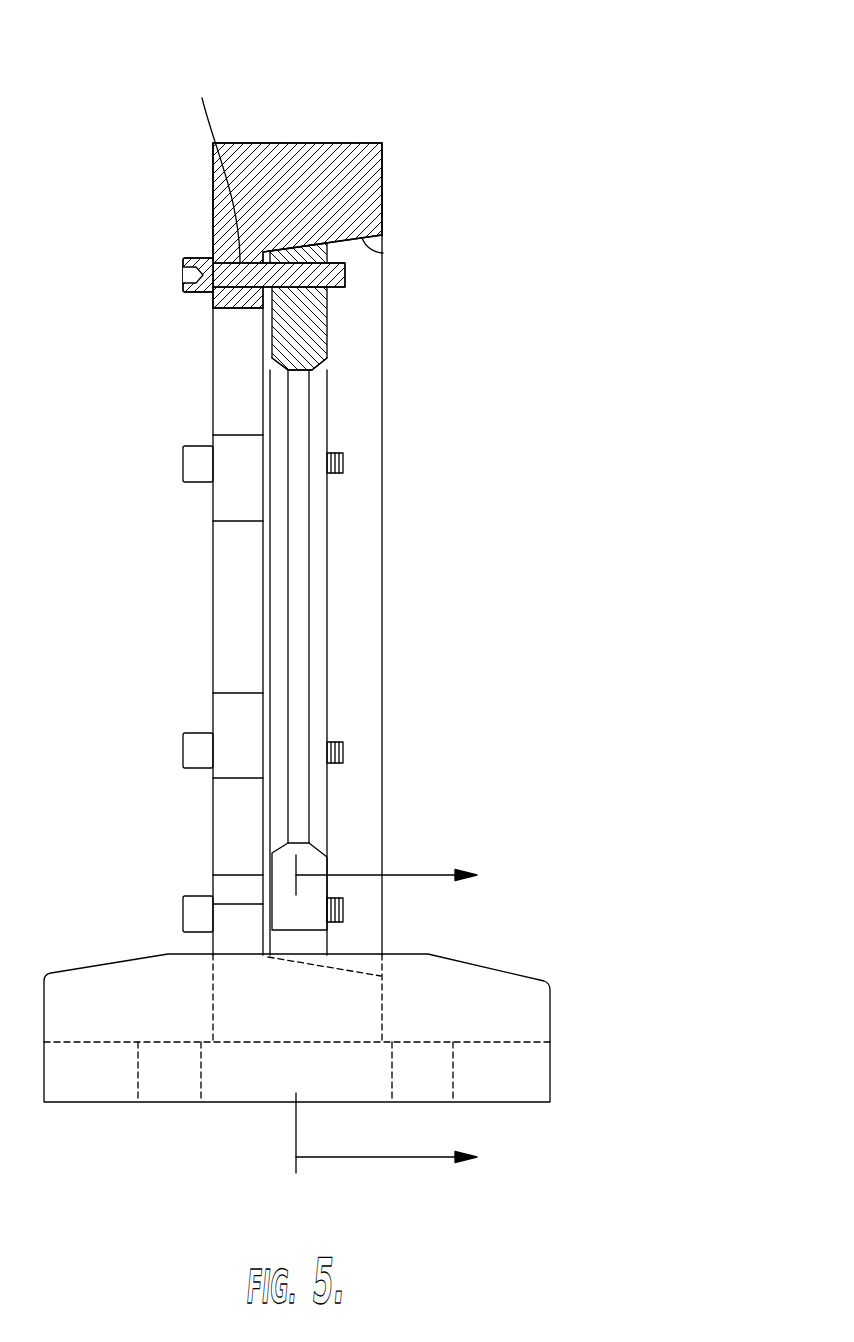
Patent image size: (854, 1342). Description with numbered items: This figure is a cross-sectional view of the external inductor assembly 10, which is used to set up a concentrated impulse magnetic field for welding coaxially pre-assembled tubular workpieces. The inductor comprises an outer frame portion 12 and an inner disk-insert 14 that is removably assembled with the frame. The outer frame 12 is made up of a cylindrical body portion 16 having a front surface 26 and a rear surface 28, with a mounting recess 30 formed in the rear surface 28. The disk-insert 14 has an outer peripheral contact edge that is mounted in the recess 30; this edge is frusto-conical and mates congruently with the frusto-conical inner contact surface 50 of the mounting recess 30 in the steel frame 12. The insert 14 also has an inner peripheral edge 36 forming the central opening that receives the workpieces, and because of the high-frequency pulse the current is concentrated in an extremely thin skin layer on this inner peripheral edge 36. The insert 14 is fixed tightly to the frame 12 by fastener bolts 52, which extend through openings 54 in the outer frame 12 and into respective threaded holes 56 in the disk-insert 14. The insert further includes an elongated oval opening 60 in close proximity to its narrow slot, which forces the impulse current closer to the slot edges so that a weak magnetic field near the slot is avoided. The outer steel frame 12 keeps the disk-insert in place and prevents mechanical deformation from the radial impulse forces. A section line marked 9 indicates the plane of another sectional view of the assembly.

The external inductor assembly 10 is at (448, 168).
The outer frame portion 12 is at (272, 140).
The inner disk-insert 14 is at (328, 315).
The cylindrical body portion 16 is at (347, 163).
The front surface 26 is at (213, 198).
The rear surface 28 is at (383, 172).
The mounting recess 30 is at (384, 570).
The inner peripheral edge 36 is at (297, 843).
The frusto-conical inner contact surface 50 is at (384, 253).
The fastener bolts 52 is at (185, 277).
The openings 54 is at (213, 161).
The threaded holes 56 is at (293, 290).
The elongated oval opening 60 is at (208, 813).
The section line 9- 9 is at (400, 1018).